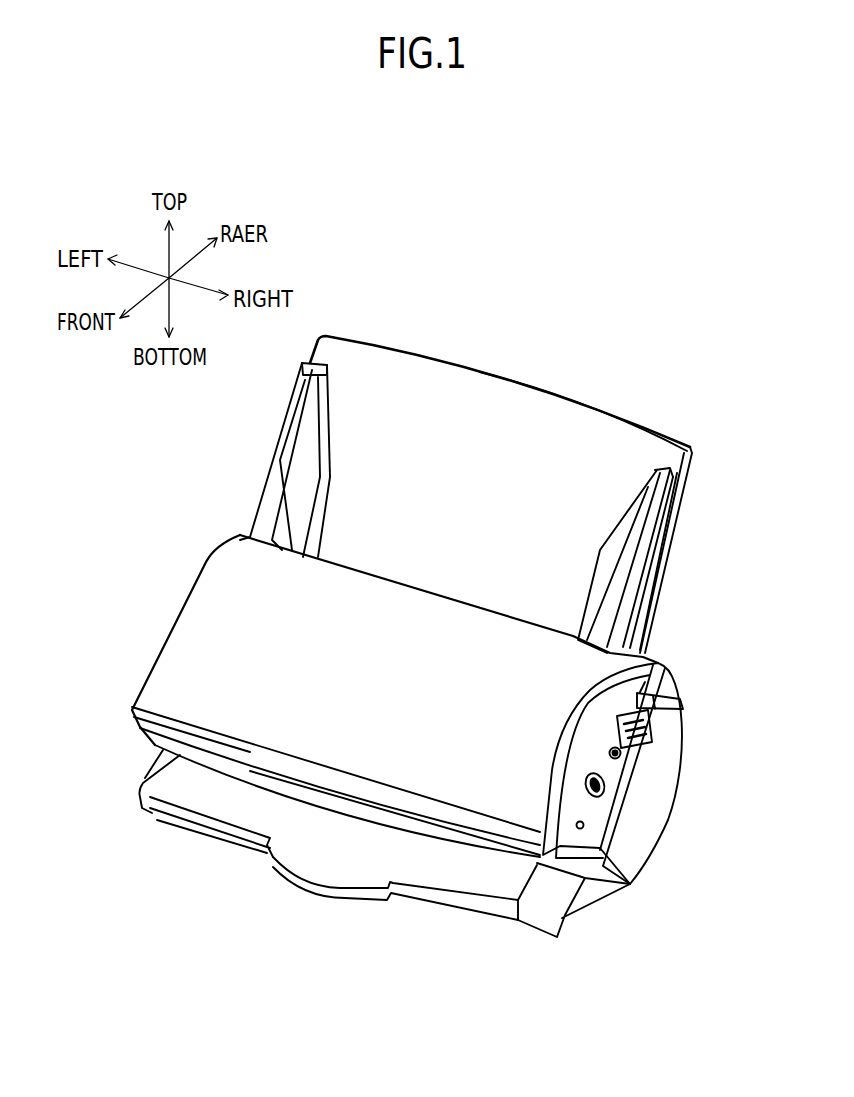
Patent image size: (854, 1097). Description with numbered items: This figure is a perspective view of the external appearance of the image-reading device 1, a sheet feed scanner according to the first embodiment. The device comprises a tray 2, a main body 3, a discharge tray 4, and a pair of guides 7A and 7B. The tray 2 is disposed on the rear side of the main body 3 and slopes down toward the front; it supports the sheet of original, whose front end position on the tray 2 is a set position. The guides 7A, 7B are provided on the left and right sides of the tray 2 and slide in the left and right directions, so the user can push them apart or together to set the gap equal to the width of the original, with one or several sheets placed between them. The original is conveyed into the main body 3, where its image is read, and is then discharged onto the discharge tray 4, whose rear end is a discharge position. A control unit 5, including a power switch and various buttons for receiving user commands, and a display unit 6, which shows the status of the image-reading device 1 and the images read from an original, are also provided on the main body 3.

The image-reading device 1 is at (468, 303).
The tray 2 is at (363, 363).
The main body 3 is at (196, 635).
The discharge tray 4 is at (192, 787).
The control unit 5 is at (600, 770).
The display unit 6 is at (673, 687).
The guide 7A is at (275, 453).
The guide 7B is at (627, 583).